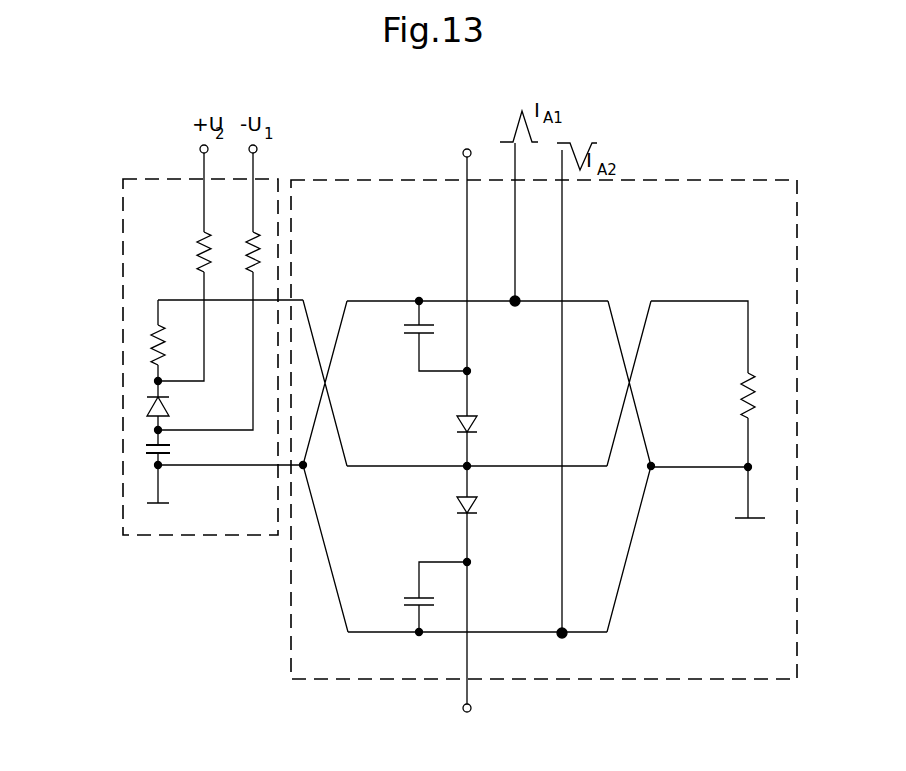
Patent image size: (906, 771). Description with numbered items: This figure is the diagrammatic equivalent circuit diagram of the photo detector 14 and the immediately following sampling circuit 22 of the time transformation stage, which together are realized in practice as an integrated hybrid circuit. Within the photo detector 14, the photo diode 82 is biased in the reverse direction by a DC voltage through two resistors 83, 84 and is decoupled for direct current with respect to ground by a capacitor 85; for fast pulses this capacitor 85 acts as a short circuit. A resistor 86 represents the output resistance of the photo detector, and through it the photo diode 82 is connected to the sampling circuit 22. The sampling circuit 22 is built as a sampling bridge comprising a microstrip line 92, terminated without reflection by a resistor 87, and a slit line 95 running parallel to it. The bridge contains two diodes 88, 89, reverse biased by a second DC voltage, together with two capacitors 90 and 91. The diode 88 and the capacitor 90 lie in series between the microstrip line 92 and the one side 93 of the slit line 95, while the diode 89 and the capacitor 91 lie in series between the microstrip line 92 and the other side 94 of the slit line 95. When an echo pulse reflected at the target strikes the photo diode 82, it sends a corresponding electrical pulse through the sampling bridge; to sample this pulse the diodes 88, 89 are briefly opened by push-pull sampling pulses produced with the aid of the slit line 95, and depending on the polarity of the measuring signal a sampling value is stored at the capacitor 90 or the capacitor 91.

The photo detector 14 is at (133, 227).
The sampling circuit 22 is at (636, 672).
The photo diode 82 is at (150, 411).
The resistor 83 is at (199, 248).
The resistor 84 is at (250, 238).
The capacitor 85 is at (145, 455).
The resistor 86 is at (156, 333).
The resistor 87 is at (742, 386).
The diode 88 is at (480, 418).
The diode 89 is at (478, 505).
The capacitor 90 is at (410, 332).
The capacitor 91 is at (405, 600).
The microstrip line 92 is at (383, 462).
The one side of the slit line 93 is at (373, 300).
The other side of the slit line 94 is at (373, 633).
The slit line 95 is at (527, 368).